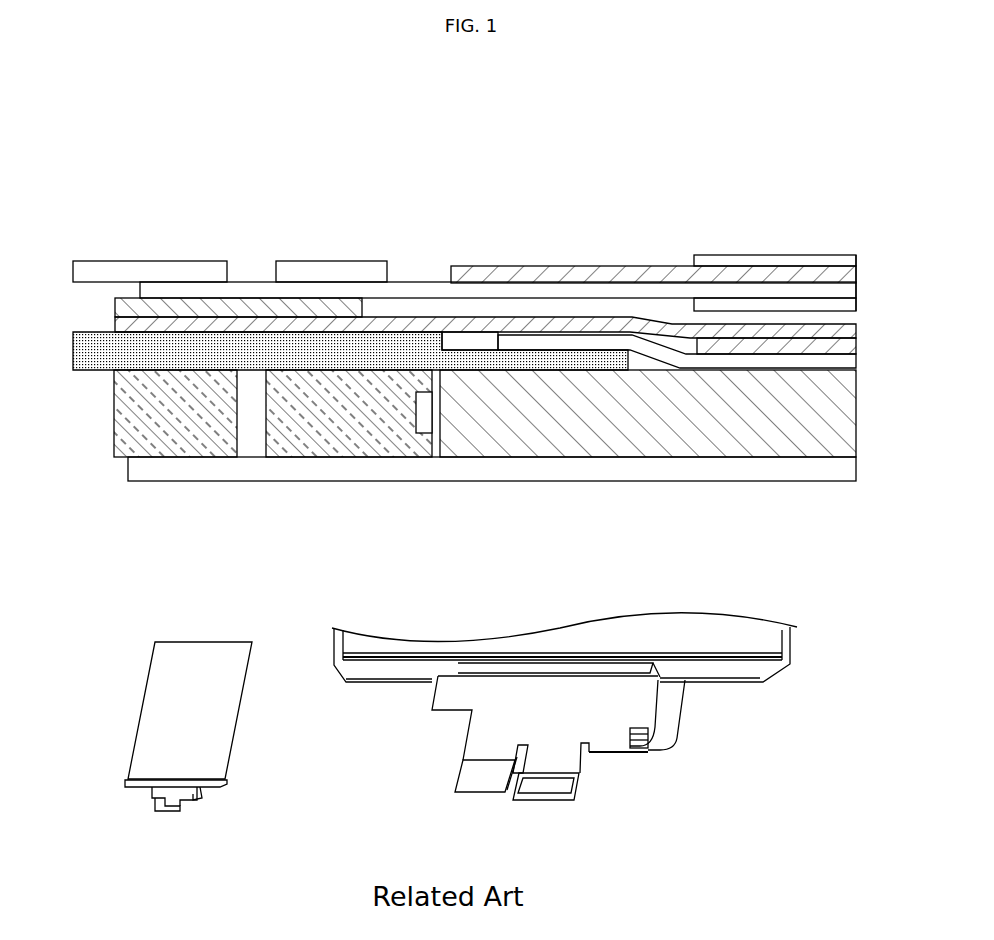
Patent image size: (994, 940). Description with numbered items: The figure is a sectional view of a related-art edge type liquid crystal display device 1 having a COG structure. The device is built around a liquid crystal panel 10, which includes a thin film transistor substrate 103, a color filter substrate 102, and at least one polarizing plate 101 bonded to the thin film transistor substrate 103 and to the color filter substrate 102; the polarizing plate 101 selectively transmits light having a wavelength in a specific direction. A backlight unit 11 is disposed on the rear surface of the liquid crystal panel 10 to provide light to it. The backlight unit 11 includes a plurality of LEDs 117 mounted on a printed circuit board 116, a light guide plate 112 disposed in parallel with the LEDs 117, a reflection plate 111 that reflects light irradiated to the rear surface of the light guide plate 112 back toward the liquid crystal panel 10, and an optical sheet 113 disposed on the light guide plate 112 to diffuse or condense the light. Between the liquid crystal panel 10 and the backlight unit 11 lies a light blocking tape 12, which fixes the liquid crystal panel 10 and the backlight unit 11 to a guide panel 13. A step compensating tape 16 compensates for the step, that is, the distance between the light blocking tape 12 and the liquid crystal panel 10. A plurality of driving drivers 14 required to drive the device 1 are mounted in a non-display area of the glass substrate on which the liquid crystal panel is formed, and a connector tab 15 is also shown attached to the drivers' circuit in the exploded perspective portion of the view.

The liquid crystal display device 1 is at (872, 231).
The liquid crystal panel 10 is at (862, 255).
The polarizing plate 101 is at (789, 305).
The color filter substrate 102 is at (532, 273).
The thin film transistor substrate 103 is at (424, 290).
The backlight unit 11 is at (910, 340).
The reflection plate 111 is at (173, 472).
The light guide plate 112 is at (622, 456).
The optical sheet 113 is at (862, 340).
The printed circuit board 116 is at (77, 351).
The LEDs 117 is at (336, 456).
The light blocking tape 12 is at (117, 322).
The guide panel 13 is at (114, 417).
The driving drivers 14 is at (332, 268).
The connector tab 15 is at (150, 268).
The step compensating tape 16 is at (117, 308).